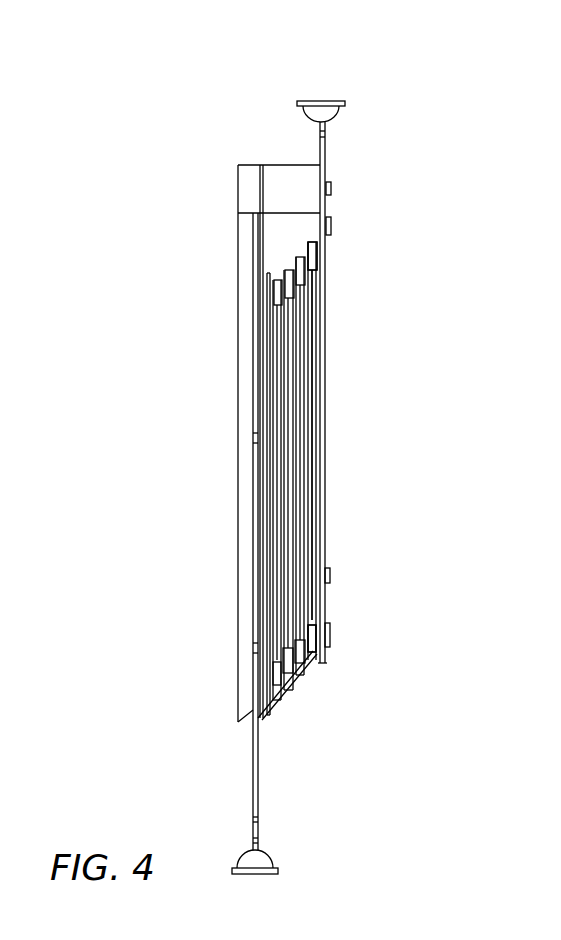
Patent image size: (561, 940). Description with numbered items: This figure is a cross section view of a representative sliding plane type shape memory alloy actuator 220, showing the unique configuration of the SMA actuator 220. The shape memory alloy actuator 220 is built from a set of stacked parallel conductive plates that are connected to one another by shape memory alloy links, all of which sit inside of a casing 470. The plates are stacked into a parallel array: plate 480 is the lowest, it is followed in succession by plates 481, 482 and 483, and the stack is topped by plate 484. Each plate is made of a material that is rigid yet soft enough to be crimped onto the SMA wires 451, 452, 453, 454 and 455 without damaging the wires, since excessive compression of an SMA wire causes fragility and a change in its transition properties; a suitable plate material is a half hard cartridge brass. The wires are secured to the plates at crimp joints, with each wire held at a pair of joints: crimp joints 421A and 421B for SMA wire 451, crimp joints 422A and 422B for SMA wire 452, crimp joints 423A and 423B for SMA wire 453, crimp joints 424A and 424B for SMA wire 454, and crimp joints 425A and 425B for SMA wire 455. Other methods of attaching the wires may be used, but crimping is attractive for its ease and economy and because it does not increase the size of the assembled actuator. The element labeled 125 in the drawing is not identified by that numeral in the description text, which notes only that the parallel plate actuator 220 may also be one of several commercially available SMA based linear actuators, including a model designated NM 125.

The shape memory alloy actuator 220 is at (168, 684).
The suction cup 125 is at (333, 112).
The plate 484 is at (325, 152).
The plate 483 is at (298, 415).
The plate 482 is at (285, 438).
The plate 481 is at (273, 465).
The plate 480 is at (253, 783).
The casing 470 is at (241, 622).
The SMA wire 451 is at (267, 493).
The SMA wire 452 is at (277, 510).
The SMA wire 453 is at (288, 540).
The SMA wire 454 is at (297, 573).
The SMA wire 455 is at (310, 607).
The crimp joint 421A is at (265, 713).
The crimp joint 422A is at (272, 687).
The crimp joint 423A is at (279, 683).
The crimp joint 424A is at (285, 667).
The crimp joint 425A is at (298, 670).
The crimp joint 421B is at (270, 283).
The crimp joint 422B is at (290, 270).
The crimp joint 423B is at (302, 255).
The crimp joint 424B is at (312, 245).
The crimp joint 425B is at (332, 223).